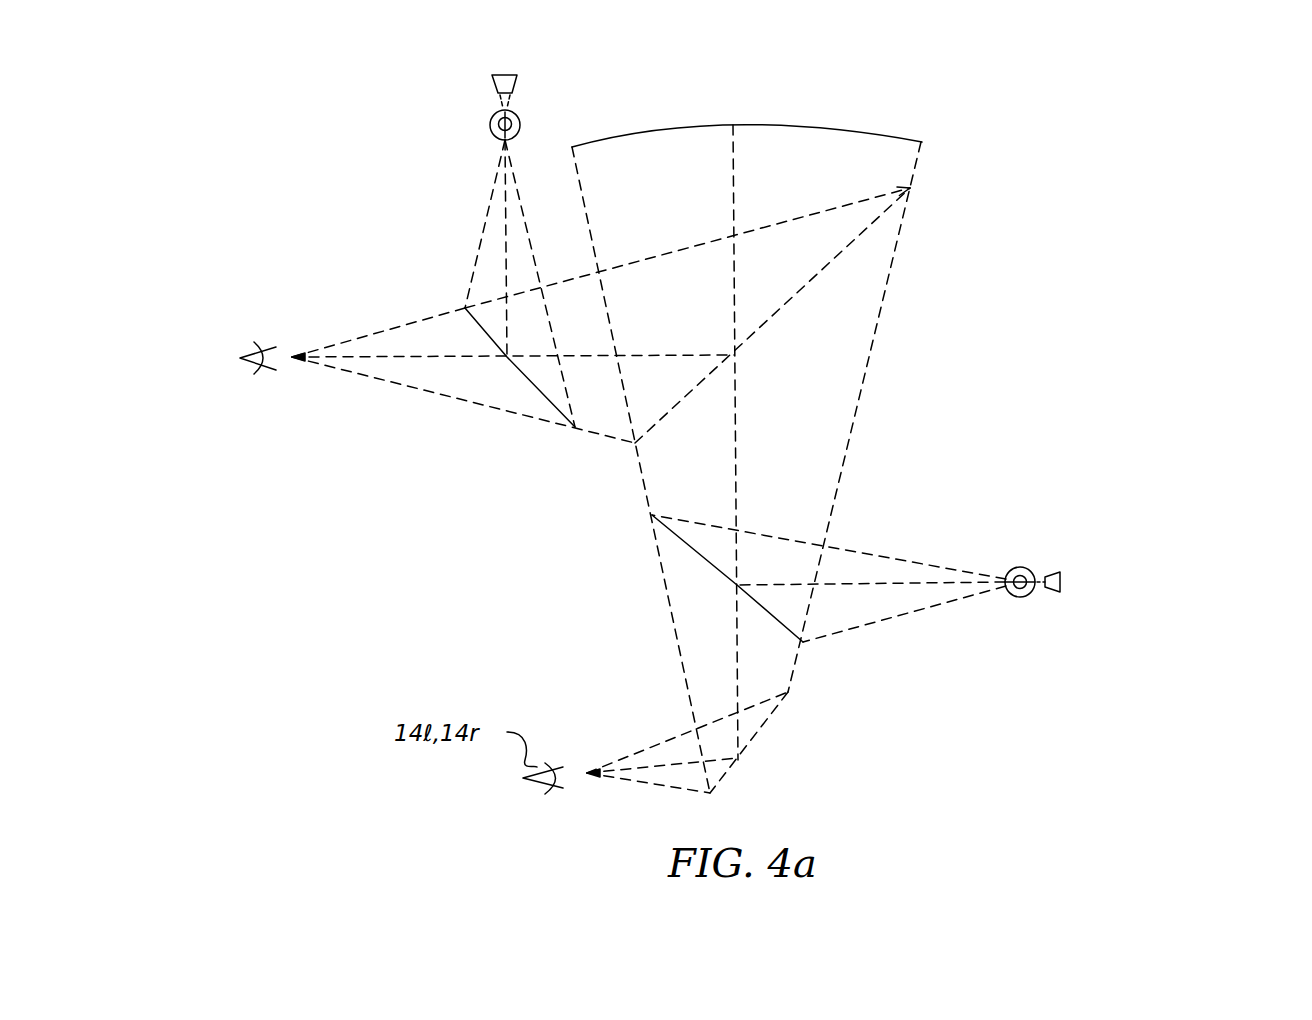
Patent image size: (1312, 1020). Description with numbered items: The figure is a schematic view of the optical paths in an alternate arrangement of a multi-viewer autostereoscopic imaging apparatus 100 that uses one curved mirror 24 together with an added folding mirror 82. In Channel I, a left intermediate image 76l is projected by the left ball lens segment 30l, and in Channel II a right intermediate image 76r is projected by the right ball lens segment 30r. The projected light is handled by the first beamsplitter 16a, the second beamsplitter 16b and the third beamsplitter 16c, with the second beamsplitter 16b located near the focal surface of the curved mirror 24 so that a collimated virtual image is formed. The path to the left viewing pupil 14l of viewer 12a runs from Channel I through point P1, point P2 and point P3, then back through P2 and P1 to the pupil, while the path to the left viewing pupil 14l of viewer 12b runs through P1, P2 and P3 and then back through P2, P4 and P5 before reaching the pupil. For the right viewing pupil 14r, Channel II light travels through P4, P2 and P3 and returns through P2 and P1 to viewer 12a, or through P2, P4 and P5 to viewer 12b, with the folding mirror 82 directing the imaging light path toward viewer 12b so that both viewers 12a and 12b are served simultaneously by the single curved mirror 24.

The curved mirror 24 is at (847, 133).
The left ball lens segment 30l is at (497, 130).
The right ball lens segment 30r is at (1025, 598).
The left intermediate image 76l is at (497, 81).
The right intermediate image 76r is at (1062, 582).
The first beamsplitter 16a is at (537, 390).
The second beamsplitter 16b is at (805, 288).
The third beamsplitter 16c is at (710, 558).
The folding mirror 82 is at (768, 720).
The viewer 12a is at (150, 275).
The viewer 12b is at (565, 743).
The left viewing pupil 14l is at (192, 336).
The right viewing pupil 14r is at (247, 353).
The multi-viewer autostereoscopic imaging apparatus 100 is at (1060, 450).
The point P1 is at (507, 357).
The point P2 is at (734, 355).
The point P3 is at (733, 125).
The point P4 is at (737, 585).
The point P5 is at (738, 758).